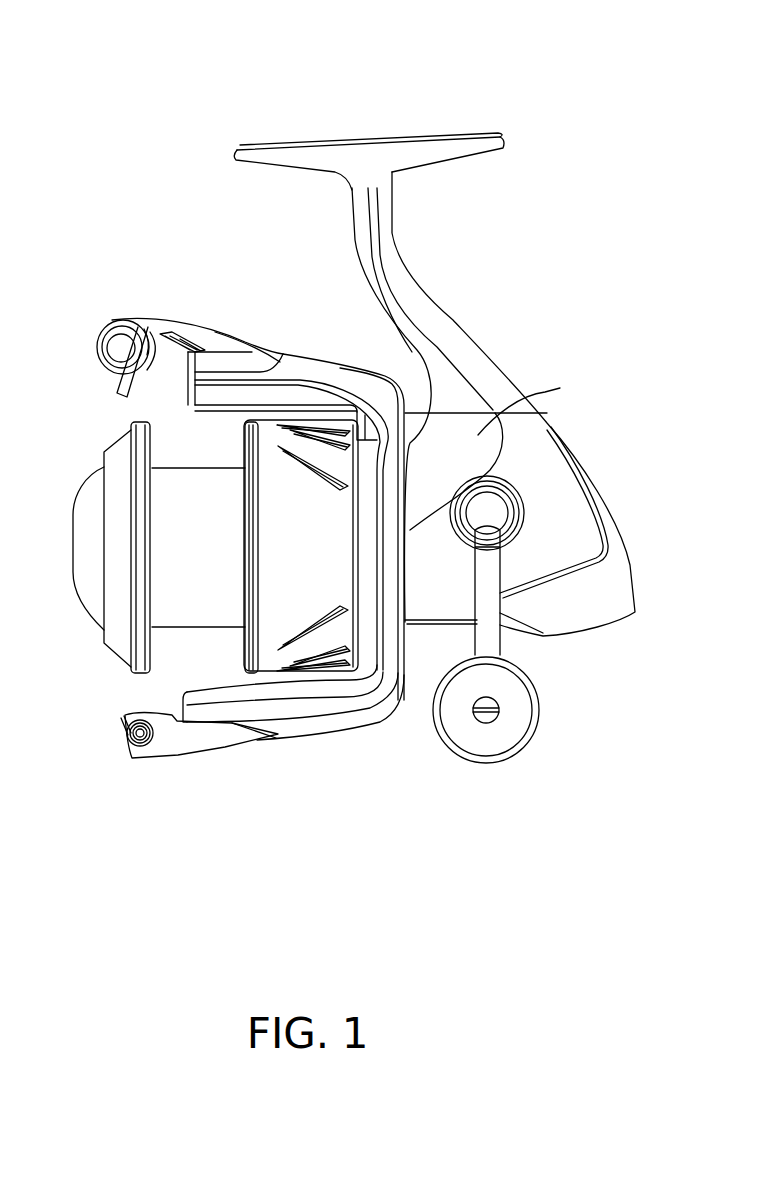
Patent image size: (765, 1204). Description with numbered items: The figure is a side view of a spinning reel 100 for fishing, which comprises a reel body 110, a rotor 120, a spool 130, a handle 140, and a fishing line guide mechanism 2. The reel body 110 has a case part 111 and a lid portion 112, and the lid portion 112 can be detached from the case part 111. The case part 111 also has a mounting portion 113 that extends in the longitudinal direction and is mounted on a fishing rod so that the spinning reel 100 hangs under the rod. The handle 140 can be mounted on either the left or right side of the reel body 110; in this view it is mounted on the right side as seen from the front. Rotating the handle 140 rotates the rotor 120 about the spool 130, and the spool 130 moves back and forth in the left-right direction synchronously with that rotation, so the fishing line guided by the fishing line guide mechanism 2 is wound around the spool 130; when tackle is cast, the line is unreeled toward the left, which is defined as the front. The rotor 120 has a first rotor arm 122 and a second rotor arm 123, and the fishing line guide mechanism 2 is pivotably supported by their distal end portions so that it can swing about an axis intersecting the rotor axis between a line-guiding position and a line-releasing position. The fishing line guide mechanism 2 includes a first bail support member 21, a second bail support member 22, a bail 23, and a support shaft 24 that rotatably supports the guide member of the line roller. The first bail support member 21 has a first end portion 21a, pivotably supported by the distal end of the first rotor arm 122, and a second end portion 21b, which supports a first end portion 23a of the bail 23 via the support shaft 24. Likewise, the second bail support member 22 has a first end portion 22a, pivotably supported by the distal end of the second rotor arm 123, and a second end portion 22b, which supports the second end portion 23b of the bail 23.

The spinning reel 100 is at (555, 88).
The reel body 110 is at (483, 335).
The case part 111 is at (547, 420).
The lid portion 112 is at (560, 388).
The mounting portion 113 is at (420, 133).
The rotor 120 is at (304, 350).
The first rotor arm 122 is at (347, 372).
The second rotor arm 123 is at (320, 733).
The spool 130 is at (190, 468).
The handle 140 is at (500, 652).
The fishing line guide mechanism 2 is at (101, 294).
The first bail support member 21 is at (188, 322).
The first end portion 21a is at (252, 370).
The second end portion 21b is at (130, 320).
The second bail support member 22 is at (178, 757).
The first end portion 22a is at (227, 747).
The second end portion 22b is at (132, 758).
The bail 23 is at (117, 395).
The first end portion 23a is at (98, 357).
The second end portion 23b is at (120, 720).
The support shaft 24 is at (98, 340).